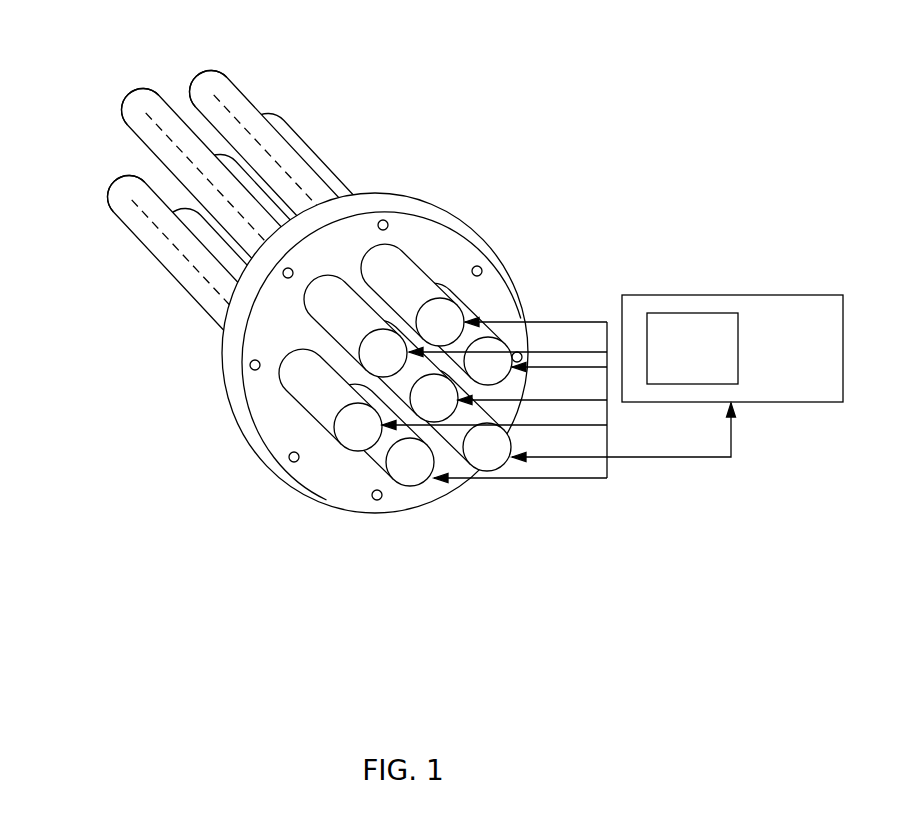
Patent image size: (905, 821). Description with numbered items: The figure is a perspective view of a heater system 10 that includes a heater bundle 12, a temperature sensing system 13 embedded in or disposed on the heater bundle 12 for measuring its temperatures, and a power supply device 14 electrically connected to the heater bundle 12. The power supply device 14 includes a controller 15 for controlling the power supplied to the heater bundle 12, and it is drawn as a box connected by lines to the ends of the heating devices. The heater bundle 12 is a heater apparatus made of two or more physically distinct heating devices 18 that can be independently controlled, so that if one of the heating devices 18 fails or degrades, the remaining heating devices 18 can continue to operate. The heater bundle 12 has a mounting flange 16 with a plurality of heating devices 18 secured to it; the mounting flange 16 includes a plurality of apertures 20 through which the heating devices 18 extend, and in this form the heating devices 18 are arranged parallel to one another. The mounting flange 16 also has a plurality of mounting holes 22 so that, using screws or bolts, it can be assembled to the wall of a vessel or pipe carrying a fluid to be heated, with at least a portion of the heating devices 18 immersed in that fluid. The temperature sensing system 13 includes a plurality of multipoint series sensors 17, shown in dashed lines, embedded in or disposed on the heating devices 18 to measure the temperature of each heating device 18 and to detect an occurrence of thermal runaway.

The heater system 10 is at (567, 39).
The heater bundle 12 is at (452, 169).
The temperature sensing system 13 is at (240, 103).
The power supply device 14 is at (702, 293).
The controller 15 is at (678, 360).
The mounting flange 16 is at (232, 406).
The multipoint series sensors 17 is at (152, 125).
The heating devices 18 is at (120, 88).
The apertures 20 is at (306, 312).
The mounting holes 22 is at (480, 266).